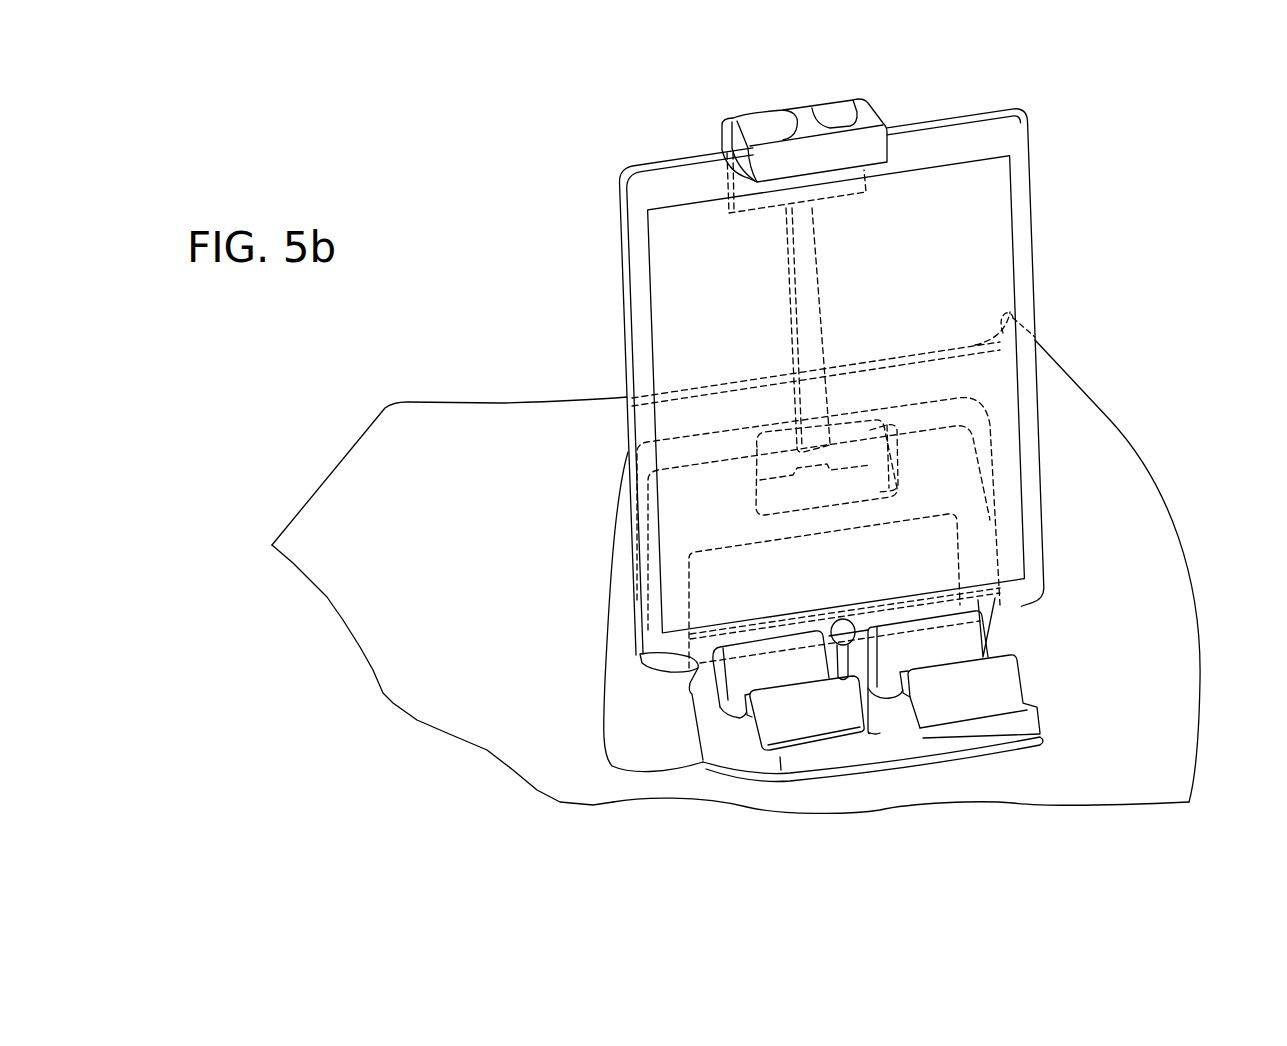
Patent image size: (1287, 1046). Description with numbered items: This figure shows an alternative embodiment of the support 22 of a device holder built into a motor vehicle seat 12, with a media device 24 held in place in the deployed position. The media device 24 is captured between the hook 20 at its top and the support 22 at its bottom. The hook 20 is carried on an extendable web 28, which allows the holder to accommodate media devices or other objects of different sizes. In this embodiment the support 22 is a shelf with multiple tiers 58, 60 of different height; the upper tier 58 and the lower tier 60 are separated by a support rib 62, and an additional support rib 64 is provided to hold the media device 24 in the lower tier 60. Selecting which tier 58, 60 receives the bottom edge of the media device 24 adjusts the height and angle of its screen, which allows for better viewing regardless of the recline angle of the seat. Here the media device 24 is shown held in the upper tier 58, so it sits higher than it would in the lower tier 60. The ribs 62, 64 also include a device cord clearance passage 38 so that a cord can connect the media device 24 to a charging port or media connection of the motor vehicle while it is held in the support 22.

The motor vehicle seat 12 is at (1161, 484).
The hook 20 is at (830, 117).
The support 22 is at (733, 765).
The media device 24 is at (1036, 211).
The extendable web 28 is at (785, 285).
The device cord clearance passage 38 is at (886, 718).
The upper tier 58 is at (650, 656).
The lower tier 60 is at (737, 723).
The support rib 62 is at (747, 648).
The additional support rib 64 is at (818, 700).